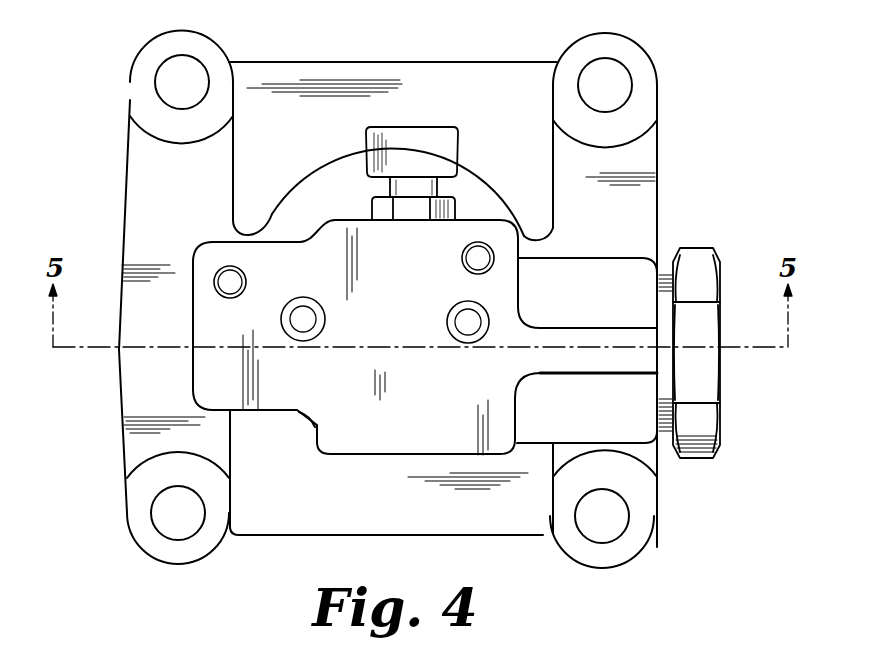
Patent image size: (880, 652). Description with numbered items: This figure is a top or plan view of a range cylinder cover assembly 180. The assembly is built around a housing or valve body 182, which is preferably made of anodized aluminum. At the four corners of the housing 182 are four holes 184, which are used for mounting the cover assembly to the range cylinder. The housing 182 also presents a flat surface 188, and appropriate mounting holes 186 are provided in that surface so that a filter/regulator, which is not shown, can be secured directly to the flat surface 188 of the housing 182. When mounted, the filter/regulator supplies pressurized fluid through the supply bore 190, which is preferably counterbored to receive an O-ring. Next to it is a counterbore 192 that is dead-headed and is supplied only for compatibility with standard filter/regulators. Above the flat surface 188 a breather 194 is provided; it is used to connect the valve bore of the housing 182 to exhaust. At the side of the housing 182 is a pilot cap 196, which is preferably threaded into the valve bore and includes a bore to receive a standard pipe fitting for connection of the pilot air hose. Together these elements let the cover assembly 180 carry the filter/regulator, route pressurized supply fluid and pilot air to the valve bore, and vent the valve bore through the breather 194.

The range cylinder cover assembly 180 is at (674, 145).
The housing or valve body 182 is at (657, 213).
The holes 184 is at (626, 84).
The mounting holes 186 is at (213, 283).
The flat surface 188 is at (346, 408).
The supply bore 190 is at (304, 297).
The counterbore 192 is at (453, 337).
The breather 194 is at (361, 191).
The pilot cap 196 is at (697, 458).